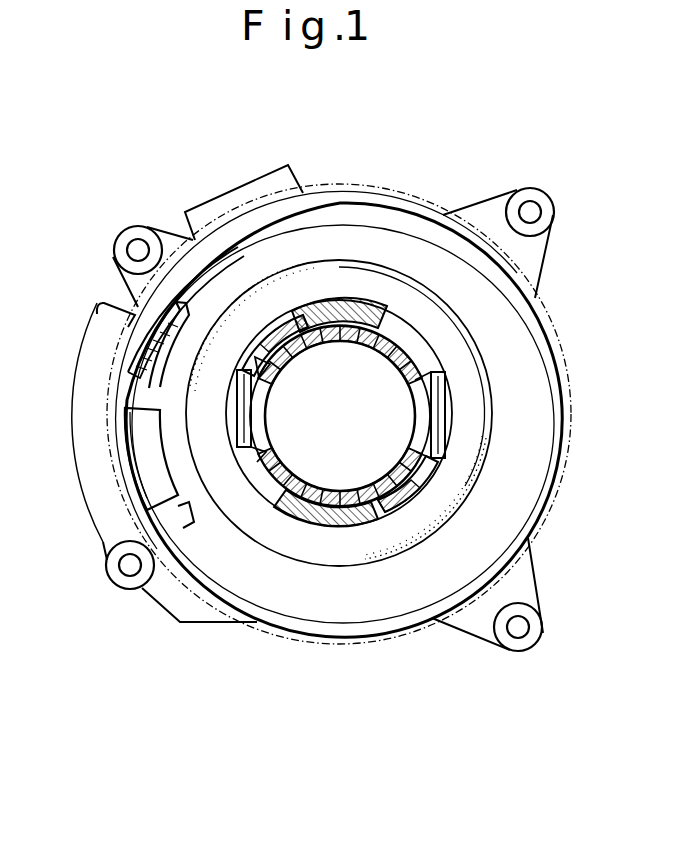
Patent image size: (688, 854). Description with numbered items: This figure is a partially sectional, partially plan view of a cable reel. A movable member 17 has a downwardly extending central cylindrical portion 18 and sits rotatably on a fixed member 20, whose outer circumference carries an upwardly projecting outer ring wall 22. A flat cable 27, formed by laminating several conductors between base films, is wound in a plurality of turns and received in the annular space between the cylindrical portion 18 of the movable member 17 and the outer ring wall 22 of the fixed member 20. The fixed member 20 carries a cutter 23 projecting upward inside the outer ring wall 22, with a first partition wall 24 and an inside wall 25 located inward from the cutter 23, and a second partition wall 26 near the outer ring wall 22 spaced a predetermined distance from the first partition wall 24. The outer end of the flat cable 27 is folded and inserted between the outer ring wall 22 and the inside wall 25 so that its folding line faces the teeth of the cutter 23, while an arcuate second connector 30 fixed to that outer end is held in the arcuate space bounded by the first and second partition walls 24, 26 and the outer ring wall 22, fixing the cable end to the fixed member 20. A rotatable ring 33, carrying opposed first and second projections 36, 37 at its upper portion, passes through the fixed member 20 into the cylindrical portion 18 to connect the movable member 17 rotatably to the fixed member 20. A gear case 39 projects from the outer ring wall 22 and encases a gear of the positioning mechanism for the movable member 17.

The movable member 17 is at (267, 636).
The central cylindrical portion 18 is at (357, 523).
The fixed member 20 is at (571, 393).
The outer ring wall 22 is at (548, 498).
The cutter 23 is at (142, 333).
The first partition wall 24 is at (137, 385).
The inside wall 25 is at (197, 246).
The second partition wall 26 is at (193, 527).
The flat cable 27 is at (483, 408).
The second connector 30 is at (145, 458).
The rotatable ring 33 is at (363, 342).
The first projection 36 is at (413, 442).
The second projection 37 is at (270, 454).
The gear case 39 is at (299, 190).